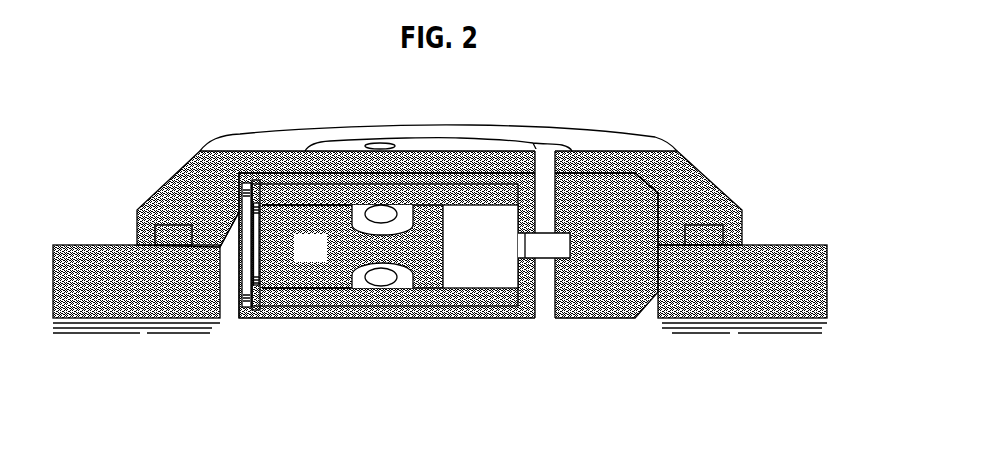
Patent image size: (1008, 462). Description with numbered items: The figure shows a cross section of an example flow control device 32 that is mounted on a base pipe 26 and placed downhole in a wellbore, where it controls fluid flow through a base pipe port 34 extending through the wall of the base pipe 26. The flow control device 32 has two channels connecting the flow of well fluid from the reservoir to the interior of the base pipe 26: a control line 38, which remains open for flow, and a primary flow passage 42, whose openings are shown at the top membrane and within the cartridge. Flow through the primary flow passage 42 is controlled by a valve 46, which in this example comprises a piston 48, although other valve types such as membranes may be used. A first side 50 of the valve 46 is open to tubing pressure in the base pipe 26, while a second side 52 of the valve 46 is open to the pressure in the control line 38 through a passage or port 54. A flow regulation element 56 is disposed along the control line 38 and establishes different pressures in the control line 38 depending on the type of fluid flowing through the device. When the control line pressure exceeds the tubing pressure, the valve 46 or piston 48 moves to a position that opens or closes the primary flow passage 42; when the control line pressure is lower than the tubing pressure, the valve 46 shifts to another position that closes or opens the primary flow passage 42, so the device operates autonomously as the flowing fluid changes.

The base pipe 26 is at (787, 245).
The flow control device 32 is at (234, 116).
The base pipe port 34 is at (369, 326).
The control line 38 is at (545, 155).
The primary flow passage 42 is at (380, 143).
The valve 46 is at (294, 291).
The piston 48 is at (323, 259).
The first side 50 is at (226, 277).
The second side 52 is at (457, 267).
The passage or port 54 is at (521, 243).
The flow regulation element 56 is at (560, 278).